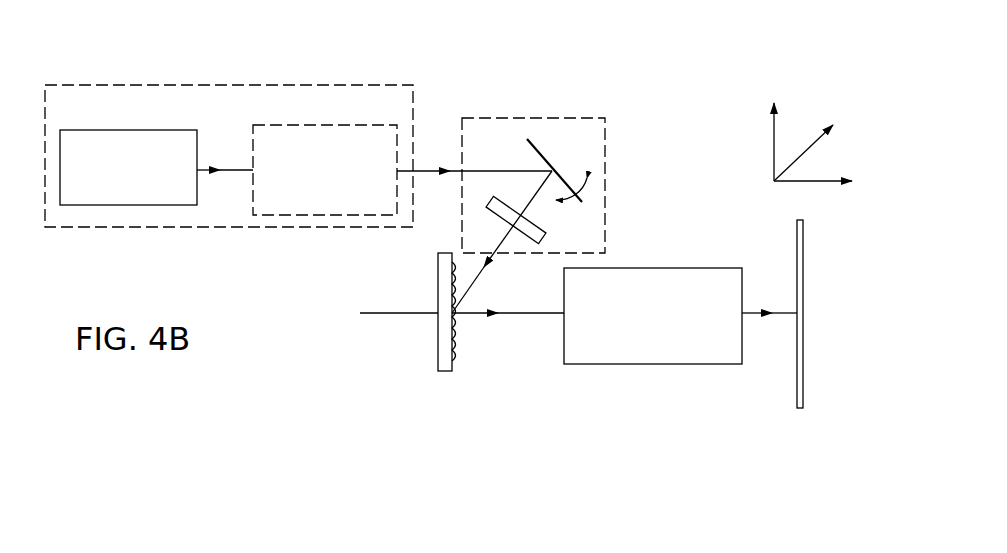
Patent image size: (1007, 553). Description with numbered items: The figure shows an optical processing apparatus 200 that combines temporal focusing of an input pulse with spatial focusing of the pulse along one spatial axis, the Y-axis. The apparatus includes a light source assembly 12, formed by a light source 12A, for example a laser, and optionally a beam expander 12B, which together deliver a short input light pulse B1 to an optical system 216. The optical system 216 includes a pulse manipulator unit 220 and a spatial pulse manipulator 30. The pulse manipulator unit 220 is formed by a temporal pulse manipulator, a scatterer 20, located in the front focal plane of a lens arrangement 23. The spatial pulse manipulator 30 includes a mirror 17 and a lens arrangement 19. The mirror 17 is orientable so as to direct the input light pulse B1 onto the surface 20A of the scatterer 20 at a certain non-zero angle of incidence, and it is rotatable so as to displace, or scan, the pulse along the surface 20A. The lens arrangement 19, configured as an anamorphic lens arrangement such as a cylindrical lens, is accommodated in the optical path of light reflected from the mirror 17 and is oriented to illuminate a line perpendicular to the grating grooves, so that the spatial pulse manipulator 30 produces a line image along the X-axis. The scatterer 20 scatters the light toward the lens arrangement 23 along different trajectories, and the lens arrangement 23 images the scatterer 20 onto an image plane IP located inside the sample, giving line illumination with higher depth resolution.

The optical processing apparatus 200 is at (124, 56).
The optical system 216 is at (700, 66).
The light source assembly 12 is at (122, 232).
The light source 12A is at (125, 130).
The beam expander 12B is at (318, 126).
The input light pulse B1 is at (243, 167).
The spatial pulse manipulator 30 is at (606, 183).
The mirror 17 is at (547, 140).
The lens arrangement 19 is at (540, 222).
The pulse manipulator unit 220 is at (414, 257).
The scatterer 20 is at (440, 371).
The surface 20A is at (455, 352).
The lens arrangement 23 is at (655, 268).
The image plane IP is at (805, 246).